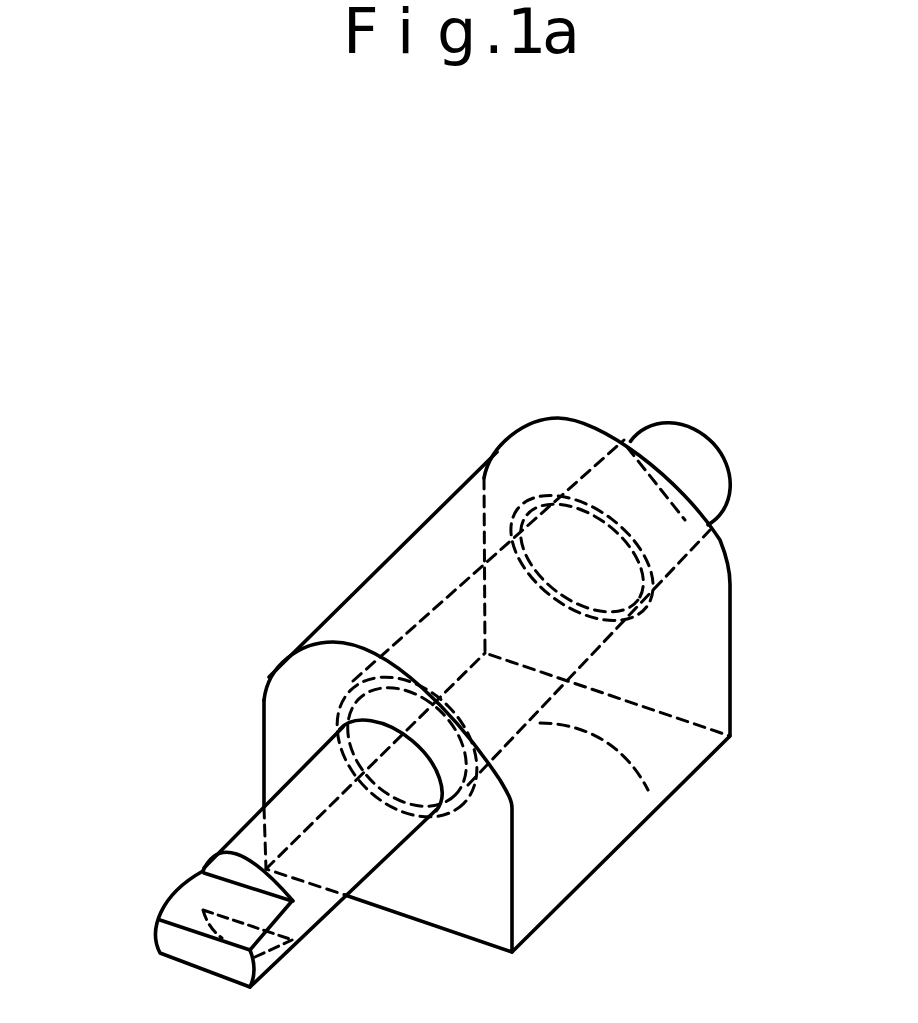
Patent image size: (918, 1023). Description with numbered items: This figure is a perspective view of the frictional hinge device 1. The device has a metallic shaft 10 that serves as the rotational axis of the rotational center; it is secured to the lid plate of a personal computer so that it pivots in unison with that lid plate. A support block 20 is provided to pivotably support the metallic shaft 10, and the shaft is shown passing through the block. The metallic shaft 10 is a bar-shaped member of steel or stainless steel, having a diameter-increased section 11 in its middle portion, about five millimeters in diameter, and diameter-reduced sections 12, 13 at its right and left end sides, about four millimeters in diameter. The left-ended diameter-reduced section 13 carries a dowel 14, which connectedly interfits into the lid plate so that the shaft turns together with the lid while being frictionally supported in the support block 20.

The frictional hinge device 1 is at (423, 326).
The metallic shaft 10 is at (218, 802).
The diameter-increased section 11 is at (648, 790).
The diameter-reduced section 12 is at (686, 455).
The diameter-reduced section 13 is at (357, 860).
The dowel 14 is at (190, 897).
The support block 20 is at (392, 568).